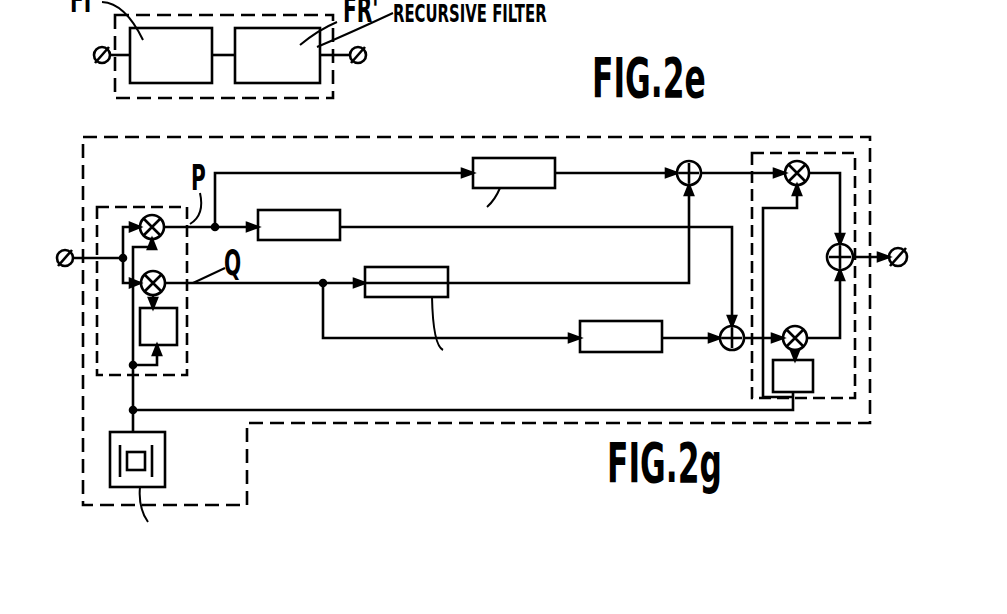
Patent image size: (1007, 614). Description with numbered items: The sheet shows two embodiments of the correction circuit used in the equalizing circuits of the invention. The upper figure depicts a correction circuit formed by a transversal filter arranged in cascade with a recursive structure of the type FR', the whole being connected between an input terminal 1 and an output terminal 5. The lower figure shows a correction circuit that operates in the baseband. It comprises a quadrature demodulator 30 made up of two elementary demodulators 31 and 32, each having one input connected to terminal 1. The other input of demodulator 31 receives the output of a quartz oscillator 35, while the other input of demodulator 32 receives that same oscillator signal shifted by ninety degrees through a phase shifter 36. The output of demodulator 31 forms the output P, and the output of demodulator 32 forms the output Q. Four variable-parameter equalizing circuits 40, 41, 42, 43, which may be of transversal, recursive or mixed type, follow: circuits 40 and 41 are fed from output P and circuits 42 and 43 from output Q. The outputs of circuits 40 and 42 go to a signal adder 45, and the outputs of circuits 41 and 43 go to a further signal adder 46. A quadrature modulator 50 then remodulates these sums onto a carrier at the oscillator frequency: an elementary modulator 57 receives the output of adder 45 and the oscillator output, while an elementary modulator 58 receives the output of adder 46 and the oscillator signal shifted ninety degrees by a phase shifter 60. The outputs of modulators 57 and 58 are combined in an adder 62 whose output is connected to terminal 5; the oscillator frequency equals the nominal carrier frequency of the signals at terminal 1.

In FIG. 2E, the terminal 1 is at (97, 62).
In FIG. 2G, the terminal 1 is at (62, 250).
In FIG. 2E, the terminal 5 is at (364, 61).
In FIG. 2G, the terminal 5 is at (905, 265).
In FIG. 2G, the quadrature demodulator 30 is at (108, 218).
In FIG. 2G, the elementary demodulator 31 is at (155, 215).
In FIG. 2G, the elementary demodulator 32 is at (164, 274).
In FIG. 2G, the quartz oscillator 35 is at (166, 458).
In FIG. 2G, the phase shifter 36 is at (178, 312).
In FIG. 2G, the variable-parameter equalizing circuit 40 is at (545, 188).
In FIG. 2G, the variable-parameter equalizing circuit 41 is at (336, 212).
In FIG. 2G, the variable-parameter equalizing circuit 42 is at (440, 270).
In FIG. 2G, the variable-parameter equalizing circuit 43 is at (598, 330).
In FIG. 2G, the signal adder 45 is at (678, 182).
In FIG. 2G, the signal adder 46 is at (722, 346).
In FIG. 2G, the quadrature modulator 50 is at (752, 220).
In FIG. 2G, the elementary modulator 57 is at (806, 184).
In FIG. 2G, the elementary modulator 58 is at (797, 326).
In FIG. 2G, the phase shifter 60 is at (813, 384).
In FIG. 2G, the adder 62 is at (827, 257).